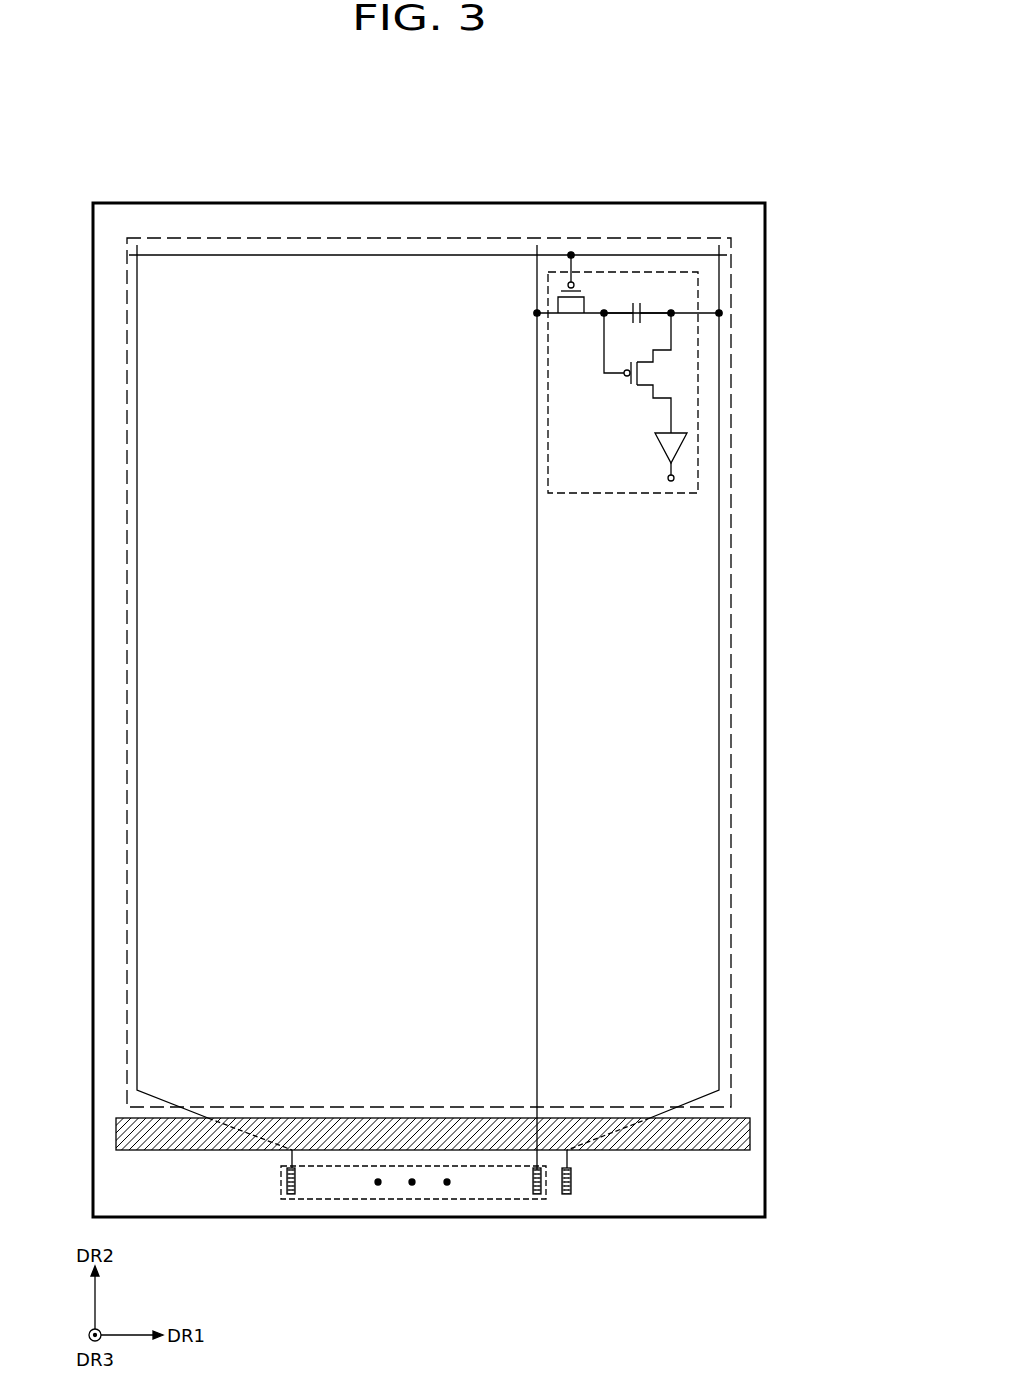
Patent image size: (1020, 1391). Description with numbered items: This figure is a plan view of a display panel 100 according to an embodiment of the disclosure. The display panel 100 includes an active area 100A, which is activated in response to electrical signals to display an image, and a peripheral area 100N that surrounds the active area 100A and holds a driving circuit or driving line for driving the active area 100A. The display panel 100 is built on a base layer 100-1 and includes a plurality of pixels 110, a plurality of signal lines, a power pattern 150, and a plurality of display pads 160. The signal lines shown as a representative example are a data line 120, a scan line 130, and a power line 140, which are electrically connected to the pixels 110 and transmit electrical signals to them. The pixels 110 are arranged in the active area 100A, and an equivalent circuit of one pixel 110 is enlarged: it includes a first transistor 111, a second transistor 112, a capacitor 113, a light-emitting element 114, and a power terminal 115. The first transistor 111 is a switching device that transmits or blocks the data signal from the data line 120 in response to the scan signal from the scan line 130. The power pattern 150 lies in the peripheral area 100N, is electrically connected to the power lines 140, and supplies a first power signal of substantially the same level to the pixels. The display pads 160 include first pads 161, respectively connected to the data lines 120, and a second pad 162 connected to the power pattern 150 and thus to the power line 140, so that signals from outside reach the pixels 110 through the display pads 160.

The display panel 100 is at (748, 130).
The base layer 100-1 is at (767, 710).
The active area 100A is at (733, 565).
The peripheral area 100N is at (750, 628).
The pixel 110 is at (621, 270).
The first transistor 111 is at (572, 296).
The second transistor 112 is at (648, 373).
The capacitor 113 is at (637, 299).
The light-emitting element 114 is at (658, 451).
The power terminal 115 is at (665, 479).
The data line 120 is at (128, 271).
The scan line 130 is at (568, 256).
The power line 140 is at (712, 271).
The power pattern 150 is at (751, 1130).
The display pads 160 is at (585, 1277).
The first pad 161 is at (412, 1199).
The second pad 162 is at (566, 1195).